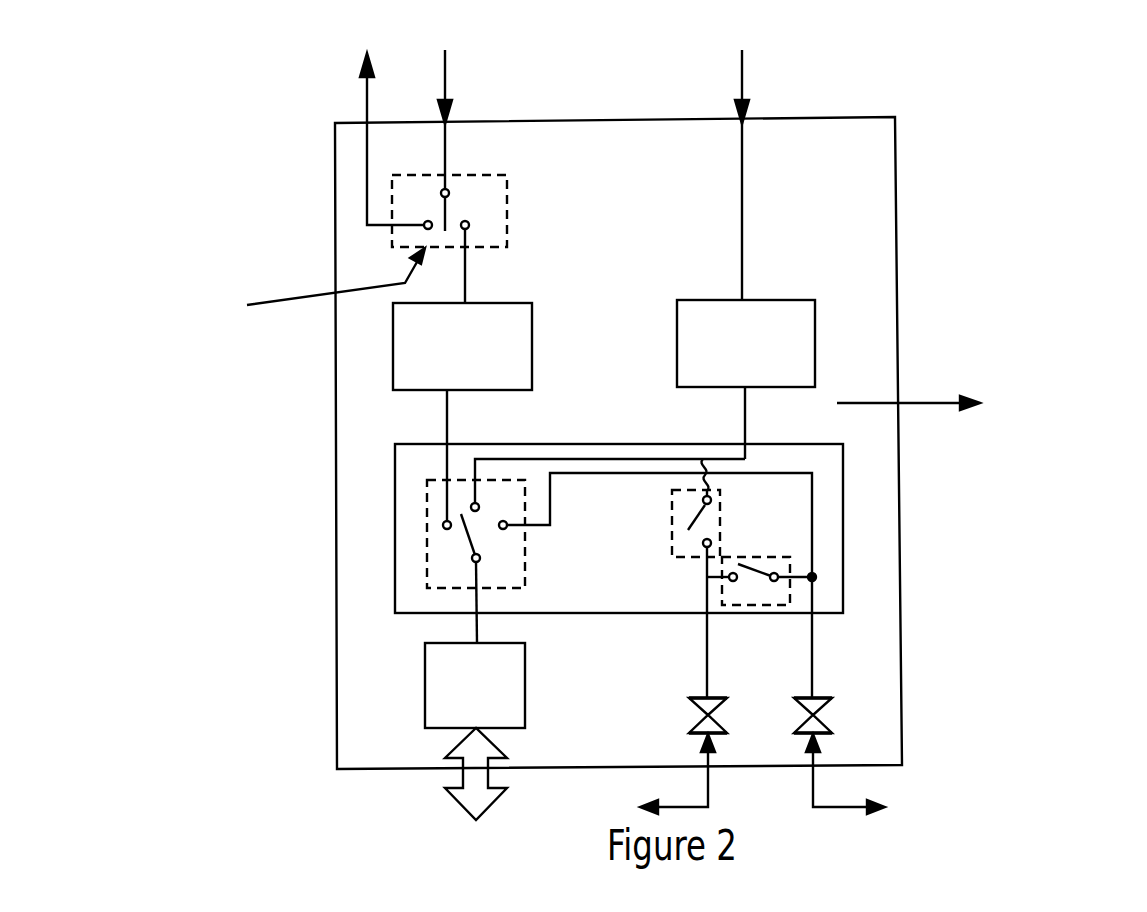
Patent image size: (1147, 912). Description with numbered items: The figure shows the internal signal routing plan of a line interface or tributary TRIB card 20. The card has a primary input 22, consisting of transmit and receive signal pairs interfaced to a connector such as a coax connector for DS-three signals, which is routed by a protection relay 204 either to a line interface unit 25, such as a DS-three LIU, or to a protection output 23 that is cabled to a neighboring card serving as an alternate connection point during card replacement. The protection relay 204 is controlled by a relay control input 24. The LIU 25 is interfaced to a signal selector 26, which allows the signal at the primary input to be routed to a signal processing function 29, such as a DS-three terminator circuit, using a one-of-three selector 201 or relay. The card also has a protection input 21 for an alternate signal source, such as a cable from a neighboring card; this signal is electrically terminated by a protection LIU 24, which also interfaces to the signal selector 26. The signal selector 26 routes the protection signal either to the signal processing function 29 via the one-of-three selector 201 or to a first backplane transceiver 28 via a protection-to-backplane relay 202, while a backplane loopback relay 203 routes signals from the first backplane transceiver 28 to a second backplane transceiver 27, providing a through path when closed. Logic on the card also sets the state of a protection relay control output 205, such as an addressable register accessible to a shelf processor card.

The TRIB card 20 is at (896, 206).
The protection input 21 is at (744, 92).
The primary input 22 is at (447, 94).
The protection output 23 is at (369, 96).
The protection LIU 24 is at (816, 352).
The line interface unit 25 is at (533, 354).
The signal selector 26 is at (844, 530).
The second backplane transceiver 27 is at (833, 700).
The first backplane transceiver 28 is at (728, 700).
The signal processing function 29 is at (526, 690).
The one-of-three selector 201 is at (526, 569).
The protection-to-backplane relay 202 is at (721, 507).
The backplane loopback relay 203 is at (748, 560).
The protection relay 204 is at (508, 202).
The protection relay control output 205 is at (905, 405).